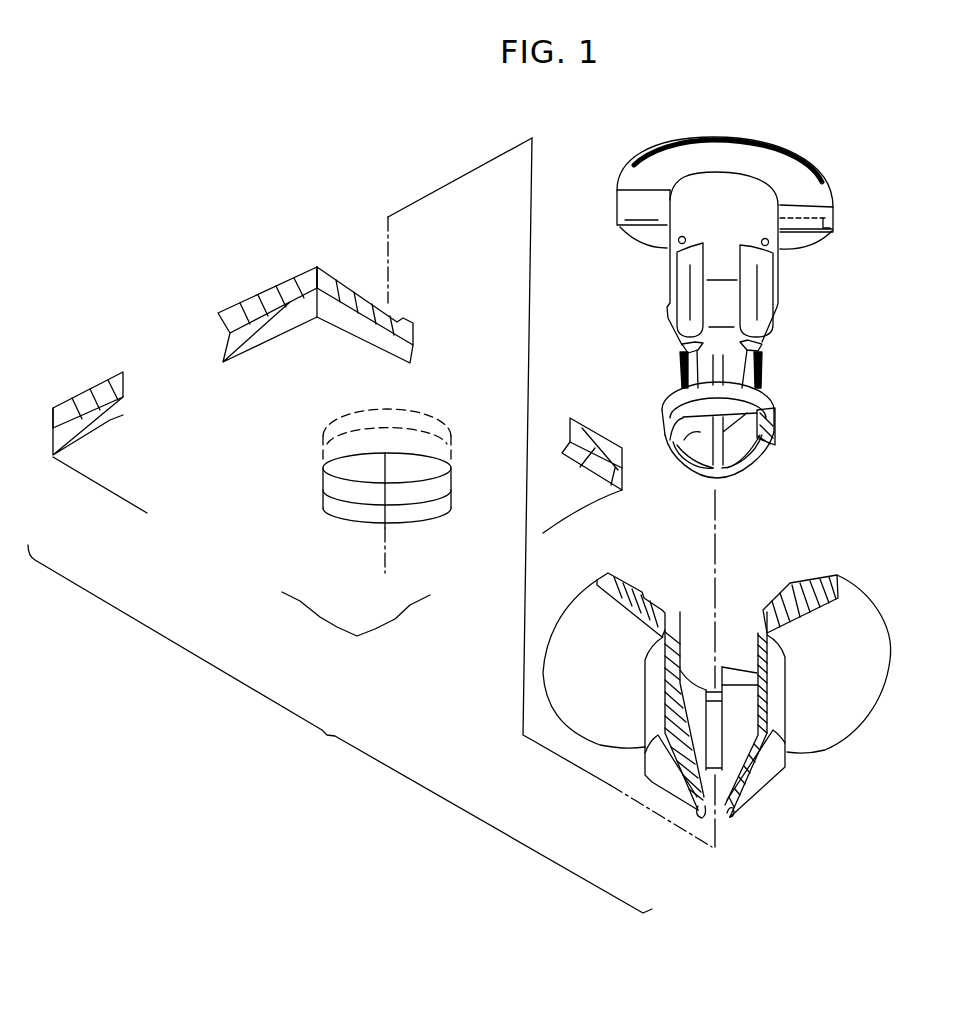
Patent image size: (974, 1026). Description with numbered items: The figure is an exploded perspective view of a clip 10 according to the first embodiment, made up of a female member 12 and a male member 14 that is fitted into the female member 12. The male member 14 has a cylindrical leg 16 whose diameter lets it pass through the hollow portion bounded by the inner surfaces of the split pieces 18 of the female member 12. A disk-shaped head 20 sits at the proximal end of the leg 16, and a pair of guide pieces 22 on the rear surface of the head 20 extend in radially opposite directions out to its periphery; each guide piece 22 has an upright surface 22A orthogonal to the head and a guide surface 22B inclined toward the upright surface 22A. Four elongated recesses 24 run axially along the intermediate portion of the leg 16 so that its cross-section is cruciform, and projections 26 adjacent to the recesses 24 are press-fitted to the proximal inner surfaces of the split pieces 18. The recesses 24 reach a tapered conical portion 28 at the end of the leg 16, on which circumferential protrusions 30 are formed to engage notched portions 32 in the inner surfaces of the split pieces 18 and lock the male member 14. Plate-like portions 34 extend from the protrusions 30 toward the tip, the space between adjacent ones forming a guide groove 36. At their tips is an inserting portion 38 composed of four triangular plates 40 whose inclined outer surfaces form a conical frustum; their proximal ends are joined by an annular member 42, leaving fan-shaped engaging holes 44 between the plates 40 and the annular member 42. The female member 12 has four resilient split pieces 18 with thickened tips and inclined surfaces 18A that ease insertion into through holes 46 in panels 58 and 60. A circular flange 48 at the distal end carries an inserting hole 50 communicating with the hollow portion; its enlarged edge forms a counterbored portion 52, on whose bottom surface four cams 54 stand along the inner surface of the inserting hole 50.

The clip 10 is at (890, 315).
The female member 12 is at (872, 588).
The male member 14 is at (847, 183).
The leg 16 is at (647, 314).
The split pieces 18 is at (652, 673).
The inclined surfaces 18A is at (643, 787).
The head 20 is at (803, 168).
The guide pieces 22 is at (617, 209).
The upright surface 22A is at (813, 230).
The guide surface 22B is at (650, 198).
The elongated recesses 24 is at (683, 283).
The projections 26 is at (677, 240).
The conical portion 28 is at (773, 334).
The protrusions 30 is at (682, 342).
The notched portions 32 is at (710, 823).
The plate-like portions 34 is at (680, 376).
The guide groove 36 is at (770, 384).
The inserting portion 38 is at (768, 457).
The triangular plates 40 is at (705, 452).
The annular member 42 is at (663, 403).
The engaging holes 44 is at (693, 434).
The through holes 46 is at (357, 512).
The flange 48 is at (863, 652).
The inserting hole 50 is at (742, 628).
The counterbored portion 52 is at (645, 593).
The cams 54 is at (682, 663).
The panel 58 is at (266, 297).
The panel 60 is at (258, 333).